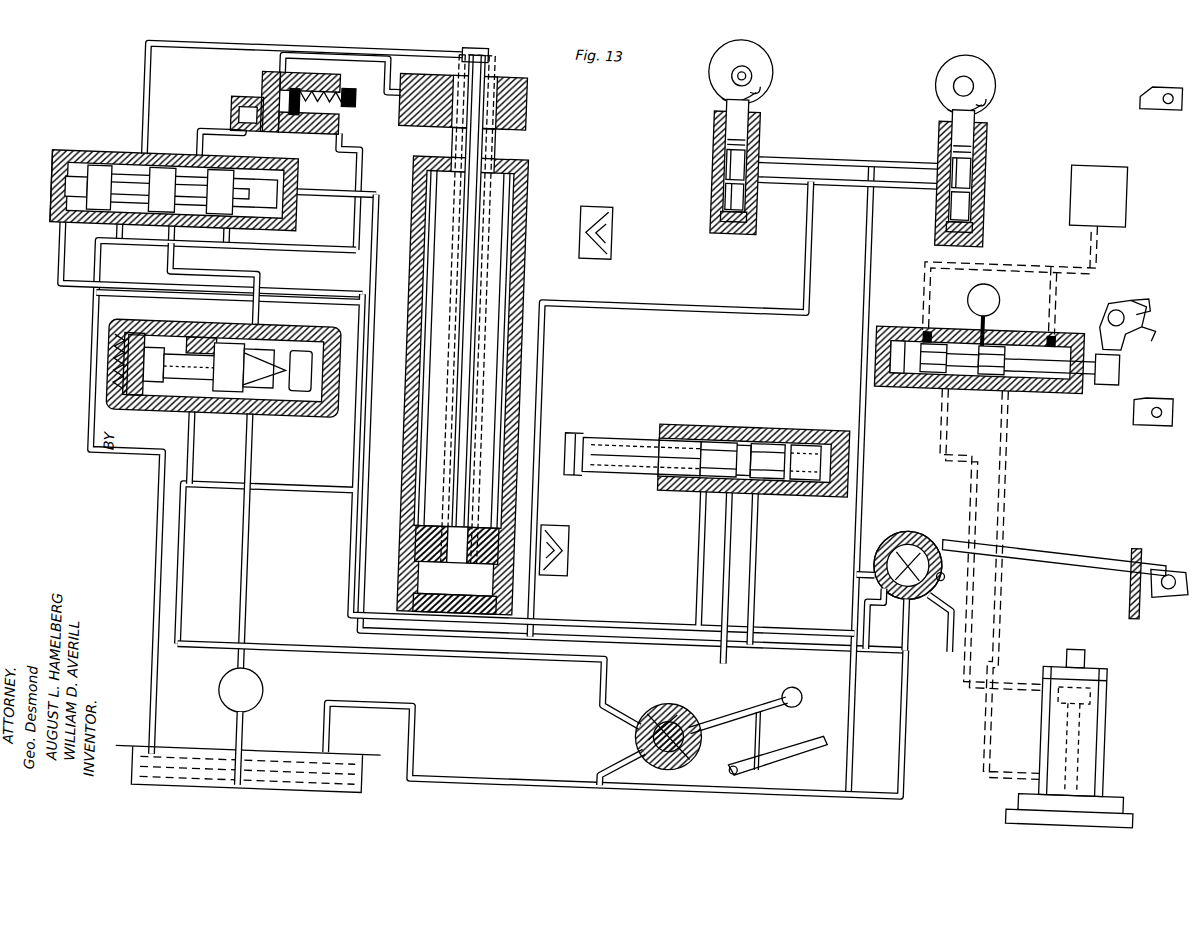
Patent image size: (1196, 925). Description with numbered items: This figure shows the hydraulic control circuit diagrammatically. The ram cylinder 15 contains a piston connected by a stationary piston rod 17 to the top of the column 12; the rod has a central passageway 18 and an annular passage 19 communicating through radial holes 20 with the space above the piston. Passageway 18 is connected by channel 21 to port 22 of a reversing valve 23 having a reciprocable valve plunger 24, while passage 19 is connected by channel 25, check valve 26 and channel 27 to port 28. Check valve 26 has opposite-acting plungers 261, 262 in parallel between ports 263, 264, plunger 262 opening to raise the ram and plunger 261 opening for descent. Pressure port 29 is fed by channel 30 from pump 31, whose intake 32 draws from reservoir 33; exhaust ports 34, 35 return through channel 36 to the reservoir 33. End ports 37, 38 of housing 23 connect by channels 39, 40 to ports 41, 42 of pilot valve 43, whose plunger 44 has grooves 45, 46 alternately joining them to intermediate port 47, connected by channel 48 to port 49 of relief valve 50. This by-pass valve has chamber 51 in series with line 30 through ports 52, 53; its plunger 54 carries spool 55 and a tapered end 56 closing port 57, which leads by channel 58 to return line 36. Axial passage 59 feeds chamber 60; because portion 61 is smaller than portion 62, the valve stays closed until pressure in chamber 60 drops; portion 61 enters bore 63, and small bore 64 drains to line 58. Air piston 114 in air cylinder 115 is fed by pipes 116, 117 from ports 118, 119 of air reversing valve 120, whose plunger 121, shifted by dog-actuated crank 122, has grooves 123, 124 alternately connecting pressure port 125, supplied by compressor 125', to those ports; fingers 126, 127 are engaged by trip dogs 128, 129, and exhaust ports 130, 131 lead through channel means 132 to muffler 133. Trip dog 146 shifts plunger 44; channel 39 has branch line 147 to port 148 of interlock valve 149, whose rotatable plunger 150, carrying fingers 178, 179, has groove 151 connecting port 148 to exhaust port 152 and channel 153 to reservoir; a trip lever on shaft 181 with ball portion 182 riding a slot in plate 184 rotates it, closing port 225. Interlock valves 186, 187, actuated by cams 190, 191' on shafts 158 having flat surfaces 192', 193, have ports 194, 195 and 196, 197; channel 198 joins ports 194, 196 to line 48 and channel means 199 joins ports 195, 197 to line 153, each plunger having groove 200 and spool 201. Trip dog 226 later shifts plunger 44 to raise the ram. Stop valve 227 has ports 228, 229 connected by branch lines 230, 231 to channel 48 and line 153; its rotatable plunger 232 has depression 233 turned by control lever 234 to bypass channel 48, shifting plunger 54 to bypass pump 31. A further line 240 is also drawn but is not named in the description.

The column 12 is at (516, 88).
The cylinder 15 is at (480, 330).
The piston rod 17 is at (487, 146).
The central passageway 18 is at (468, 224).
The annular passage 19 is at (480, 284).
The radial holes 20 is at (470, 520).
The channel 21 is at (186, 60).
The port 22 is at (162, 174).
The reversing valve 23 is at (58, 170).
The valve plunger 24 is at (57, 198).
The channel 25 is at (270, 71).
The check valve 26 is at (271, 79).
The channel 27 is at (190, 147).
The port 28 is at (172, 171).
The pressure port 29 is at (167, 244).
The channel 30 is at (252, 289).
The pump 31 is at (272, 693).
The intake 32 is at (256, 735).
The reservoir 33 is at (222, 761).
The exhaust port 34 is at (113, 244).
The exhaust port 35 is at (223, 244).
The return channel 36 is at (93, 268).
The port 37 is at (52, 242).
The port 38 is at (289, 193).
The channel 39 is at (340, 305).
The channel 40 is at (656, 630).
The port 41 is at (778, 490).
The port 42 is at (704, 492).
The trip operated pilot valve 43 is at (706, 464).
The plunger 44 is at (632, 446).
The annular groove 45 is at (722, 446).
The annular groove 46 is at (768, 446).
The intermediate port 47 is at (730, 496).
The channel 48 is at (730, 550).
The port 49 is at (222, 391).
The relief valve 50 is at (323, 427).
The chamber 51 is at (261, 427).
The port 52 is at (237, 427).
The port 53 is at (263, 352).
The plunger 54 is at (149, 427).
The enlarged spool 55 is at (229, 427).
The tapered end 56 is at (299, 359).
The port 57 is at (275, 427).
The channel 58 is at (309, 499).
The axial passage 59 is at (219, 352).
The chamber 60 is at (191, 354).
The portion 61 is at (165, 434).
The portion 62 is at (242, 342).
The bore 63 is at (166, 350).
The small axial bore 64 is at (204, 427).
The air operated piston 114 is at (1092, 696).
The air cylinder 115 is at (1081, 737).
The pipe 116 is at (978, 670).
The pipe 117 is at (1008, 646).
The port 118 is at (930, 366).
The port 119 is at (1012, 376).
The reversing valve 120 is at (1034, 332).
The plunger 121 is at (1106, 366).
The dog-actuated crank 122 is at (1128, 280).
The annular groove 123 is at (958, 332).
The annular groove 124 is at (1000, 332).
The pressure port 125 is at (1004, 297).
The compressor 125' is at (998, 281).
The finger 126 is at (1146, 290).
The finger 127 is at (1144, 322).
The trip dog 128 is at (1140, 89).
The trip dog 129 is at (1150, 380).
The port 130 is at (922, 318).
The port 131 is at (1050, 318).
The channel means 132 is at (1070, 258).
The muffler 133 is at (1118, 188).
The trip dog 146 is at (573, 571).
The branch line connection 147 is at (798, 642).
The port 148 is at (920, 590).
The interlock valve 149 is at (899, 524).
The rotatable plunger 150 is at (1003, 575).
The groove 151 is at (892, 590).
The exhaust port 152 is at (930, 625).
The channel 153 is at (914, 742).
The shaft 158 is at (722, 68).
The finger 178 is at (950, 568).
The finger 179 is at (933, 540).
The shaft 181 is at (1057, 548).
The ball-shaped portion 182 is at (1140, 546).
The plate 184 is at (1146, 586).
The interlock valve 186 is at (844, 139).
The interlock valve 187 is at (1039, 317).
The cam 190 is at (756, 52).
The cam 191' is at (983, 85).
The flat surface 192' is at (780, 83).
The flat surface 193 is at (976, 90).
The port 194 is at (749, 177).
The port 195 is at (750, 150).
The port 196 is at (934, 186).
The port 197 is at (929, 152).
The channel 198 is at (802, 262).
The channel means 199 is at (862, 218).
The groove 200 is at (719, 156).
The spool 201 is at (719, 180).
The port 225 is at (866, 562).
The trip dog 226 is at (589, 218).
The stop valve 227 is at (706, 736).
The port 228 is at (664, 712).
The port 229 is at (656, 758).
The branch line 230 is at (611, 692).
The branch line 231 is at (622, 760).
The rotatable plunger 232 is at (692, 708).
The depression 233 is at (706, 760).
The manually operable control lever 234 is at (736, 718).
The pipe 240 is at (641, 423).
The check valve plunger 261 is at (310, 94).
The check valve plunger 262 is at (222, 120).
The port 263 is at (276, 84).
The port 264 is at (322, 140).